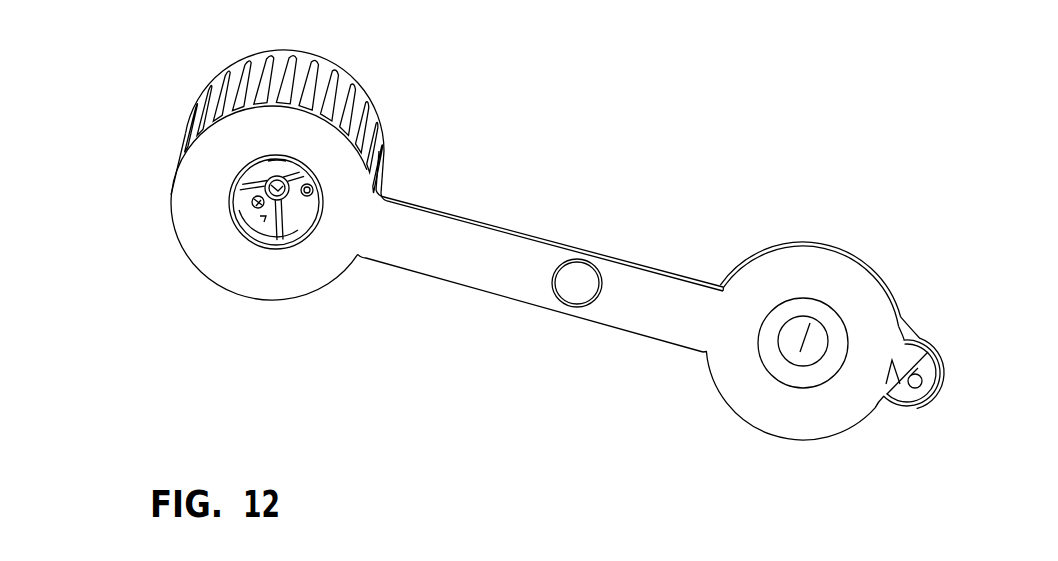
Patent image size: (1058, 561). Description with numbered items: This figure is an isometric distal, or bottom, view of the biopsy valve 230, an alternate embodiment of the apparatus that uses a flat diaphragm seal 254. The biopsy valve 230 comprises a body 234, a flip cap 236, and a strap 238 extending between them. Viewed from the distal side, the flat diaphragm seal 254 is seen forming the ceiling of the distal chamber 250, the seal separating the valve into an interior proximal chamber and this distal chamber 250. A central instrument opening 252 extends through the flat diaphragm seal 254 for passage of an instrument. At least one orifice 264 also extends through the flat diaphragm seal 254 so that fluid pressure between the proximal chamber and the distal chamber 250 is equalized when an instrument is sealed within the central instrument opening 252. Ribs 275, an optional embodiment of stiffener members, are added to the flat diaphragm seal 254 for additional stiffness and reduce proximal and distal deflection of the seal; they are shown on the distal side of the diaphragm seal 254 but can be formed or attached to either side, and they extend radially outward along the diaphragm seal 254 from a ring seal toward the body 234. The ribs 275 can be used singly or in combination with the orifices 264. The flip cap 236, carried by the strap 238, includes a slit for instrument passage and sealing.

The biopsy valve 230 is at (673, 162).
The body 234 is at (350, 78).
The flip cap 236 is at (840, 293).
The strap 238 is at (487, 262).
The distal chamber 250 is at (273, 229).
The central instrument opening 252 is at (266, 189).
The flat diaphragm seal 254 is at (265, 225).
The orifice 264 is at (318, 183).
The ribs 275 is at (293, 228).